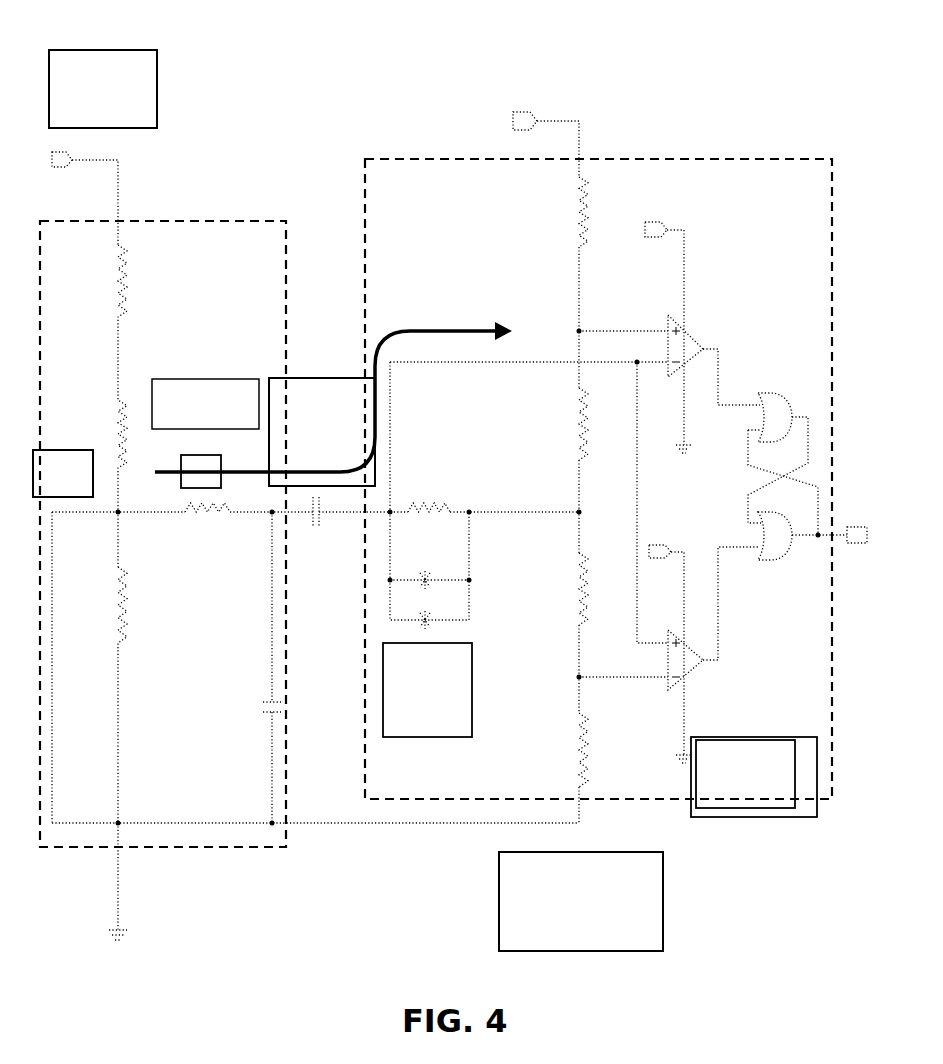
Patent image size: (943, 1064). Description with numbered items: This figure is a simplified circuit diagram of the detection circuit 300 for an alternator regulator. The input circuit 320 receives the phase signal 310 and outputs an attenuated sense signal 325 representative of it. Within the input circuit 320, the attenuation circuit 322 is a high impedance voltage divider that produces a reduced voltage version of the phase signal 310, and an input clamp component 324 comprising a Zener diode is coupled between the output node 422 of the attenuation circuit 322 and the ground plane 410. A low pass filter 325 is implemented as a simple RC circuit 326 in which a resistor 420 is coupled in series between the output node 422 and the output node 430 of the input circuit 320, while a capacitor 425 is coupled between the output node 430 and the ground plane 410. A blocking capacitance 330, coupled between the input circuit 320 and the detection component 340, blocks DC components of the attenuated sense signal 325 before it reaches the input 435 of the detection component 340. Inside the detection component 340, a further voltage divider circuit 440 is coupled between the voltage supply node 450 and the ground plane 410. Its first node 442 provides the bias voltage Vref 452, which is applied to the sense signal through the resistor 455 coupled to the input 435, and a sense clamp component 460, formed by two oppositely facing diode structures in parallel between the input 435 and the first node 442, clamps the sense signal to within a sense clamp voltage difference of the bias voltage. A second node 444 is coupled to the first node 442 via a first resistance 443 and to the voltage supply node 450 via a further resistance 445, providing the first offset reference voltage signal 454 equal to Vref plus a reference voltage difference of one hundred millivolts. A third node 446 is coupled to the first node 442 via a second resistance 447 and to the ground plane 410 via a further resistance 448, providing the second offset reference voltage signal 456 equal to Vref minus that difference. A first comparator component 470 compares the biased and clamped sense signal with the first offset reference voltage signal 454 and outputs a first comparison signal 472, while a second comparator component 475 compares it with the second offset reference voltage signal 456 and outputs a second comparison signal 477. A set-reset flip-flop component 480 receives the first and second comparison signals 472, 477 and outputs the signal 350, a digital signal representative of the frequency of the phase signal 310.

The detection circuit 300 is at (98, 66).
The phase signal 310 is at (58, 120).
The input circuit 320 is at (192, 220).
The attenuation circuit 322 is at (96, 362).
The input clamp component 324 is at (56, 655).
The low pass filter 325 is at (340, 470).
The RC filter network 326 is at (224, 712).
The blocking capacitance 330 is at (330, 568).
The detection component 340 is at (386, 158).
The signal 350 is at (858, 568).
The ground plane 410 is at (122, 943).
The resistor 420 is at (200, 538).
The output node 422 is at (112, 496).
The capacitor 425 is at (262, 690).
The output node 430 is at (286, 520).
The input 435 is at (360, 520).
The voltage divider circuit 440 is at (526, 272).
The first node 442 is at (581, 516).
The first resistance 443 is at (570, 426).
The second node 444 is at (577, 330).
The further resistance 445 is at (570, 207).
The third node 446 is at (577, 676).
The second resistance 447 is at (570, 598).
The further resistance 448 is at (570, 736).
The voltage supply node 450 is at (548, 108).
The bias voltage Vref 452 is at (504, 500).
The first offset reference voltage signal 454 is at (606, 298).
The resistor 455 is at (432, 540).
The second offset reference voltage signal 456 is at (621, 678).
The sense clamp component 460 is at (450, 656).
The first comparator component 470 is at (693, 322).
The first comparison signal 472 is at (720, 362).
The second comparator component 475 is at (692, 682).
The second comparison signal 477 is at (720, 626).
The set-reset flip-flop component 480 is at (782, 345).